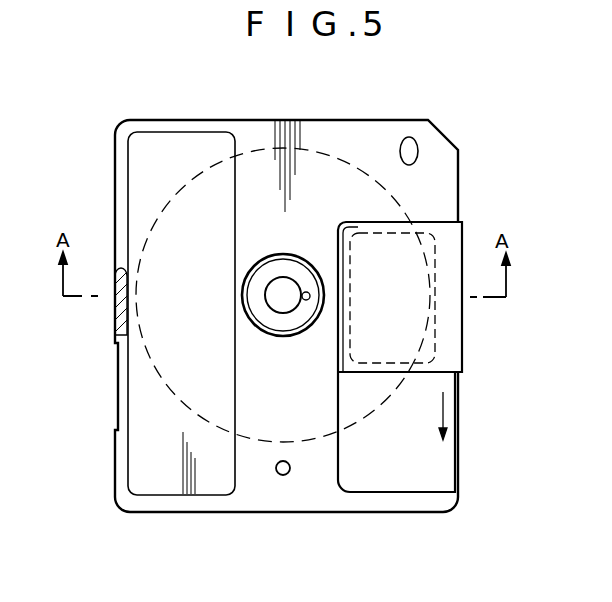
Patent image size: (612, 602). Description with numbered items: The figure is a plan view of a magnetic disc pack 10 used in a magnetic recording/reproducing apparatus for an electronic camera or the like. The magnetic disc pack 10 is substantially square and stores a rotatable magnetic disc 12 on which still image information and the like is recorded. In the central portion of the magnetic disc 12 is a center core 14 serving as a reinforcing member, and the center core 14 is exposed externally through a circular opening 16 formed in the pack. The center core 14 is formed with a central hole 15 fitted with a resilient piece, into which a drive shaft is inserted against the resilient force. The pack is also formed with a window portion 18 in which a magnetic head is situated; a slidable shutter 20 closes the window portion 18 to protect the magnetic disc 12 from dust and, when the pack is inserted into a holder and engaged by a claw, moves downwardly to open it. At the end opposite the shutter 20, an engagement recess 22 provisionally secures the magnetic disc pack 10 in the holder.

The magnetic disc pack 10 is at (366, 118).
The magnetic disc 12 is at (376, 175).
The center core 14 is at (267, 268).
The central hole 15 is at (284, 306).
The circular opening 16 is at (300, 272).
The window portion 18 is at (409, 211).
The shutter 20 is at (446, 236).
The engagement recess 22 is at (114, 300).